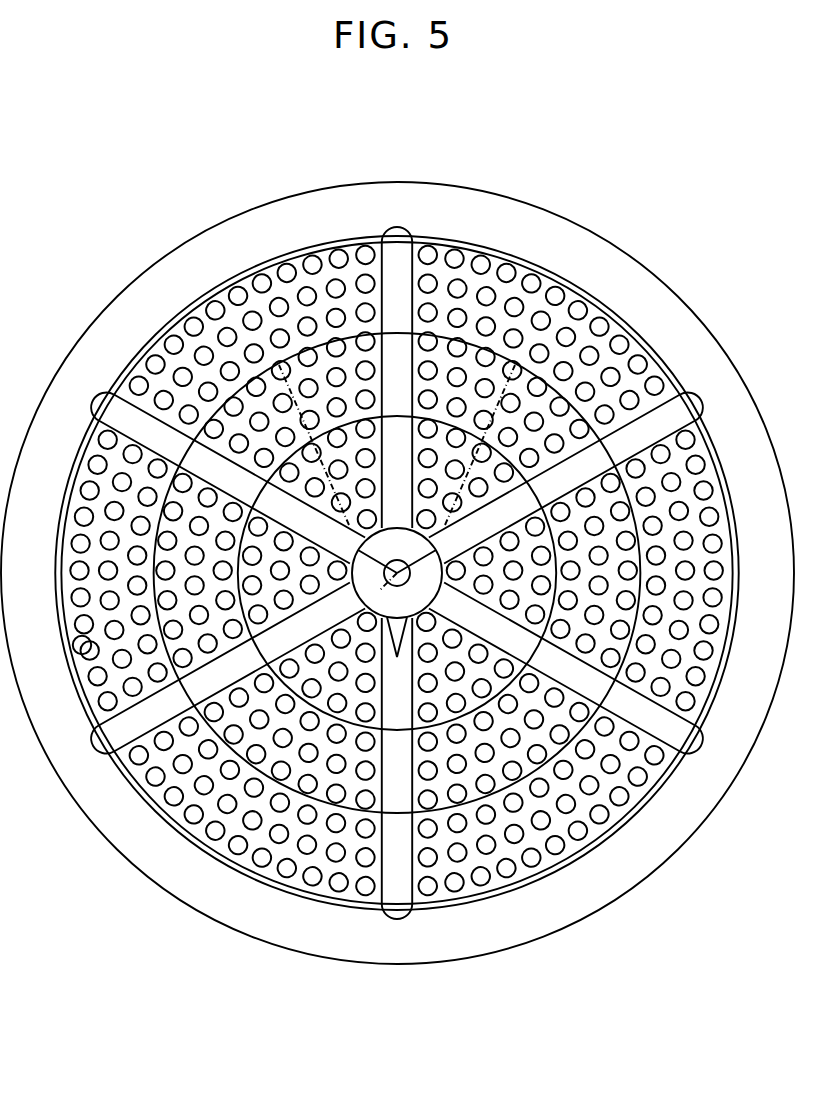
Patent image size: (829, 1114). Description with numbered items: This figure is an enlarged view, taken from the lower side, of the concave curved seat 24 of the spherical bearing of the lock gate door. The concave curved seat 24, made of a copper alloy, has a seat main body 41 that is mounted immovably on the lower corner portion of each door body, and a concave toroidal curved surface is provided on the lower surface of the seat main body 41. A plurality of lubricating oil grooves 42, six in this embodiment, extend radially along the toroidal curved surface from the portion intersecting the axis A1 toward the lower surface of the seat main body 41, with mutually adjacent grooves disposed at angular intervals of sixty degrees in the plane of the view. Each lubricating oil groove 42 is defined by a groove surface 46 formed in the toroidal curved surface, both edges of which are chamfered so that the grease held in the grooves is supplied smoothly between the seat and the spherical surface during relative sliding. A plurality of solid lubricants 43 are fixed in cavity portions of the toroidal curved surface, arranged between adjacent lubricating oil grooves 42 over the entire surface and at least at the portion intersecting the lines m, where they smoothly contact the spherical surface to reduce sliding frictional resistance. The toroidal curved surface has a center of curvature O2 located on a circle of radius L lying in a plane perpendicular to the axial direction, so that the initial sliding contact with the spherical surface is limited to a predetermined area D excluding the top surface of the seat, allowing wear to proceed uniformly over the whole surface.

The concave curved seat 24 is at (160, 268).
The seat main body 41 is at (110, 312).
The lubricating oil grooves 42 is at (402, 262).
The solid lubricants 43 is at (275, 258).
The groove surfaces 46 is at (395, 280).
The predetermined area D is at (108, 636).
The axis A1 is at (397, 573).
The center of curvature O2 is at (399, 651).
The radius L is at (397, 573).
The lines m is at (397, 452).